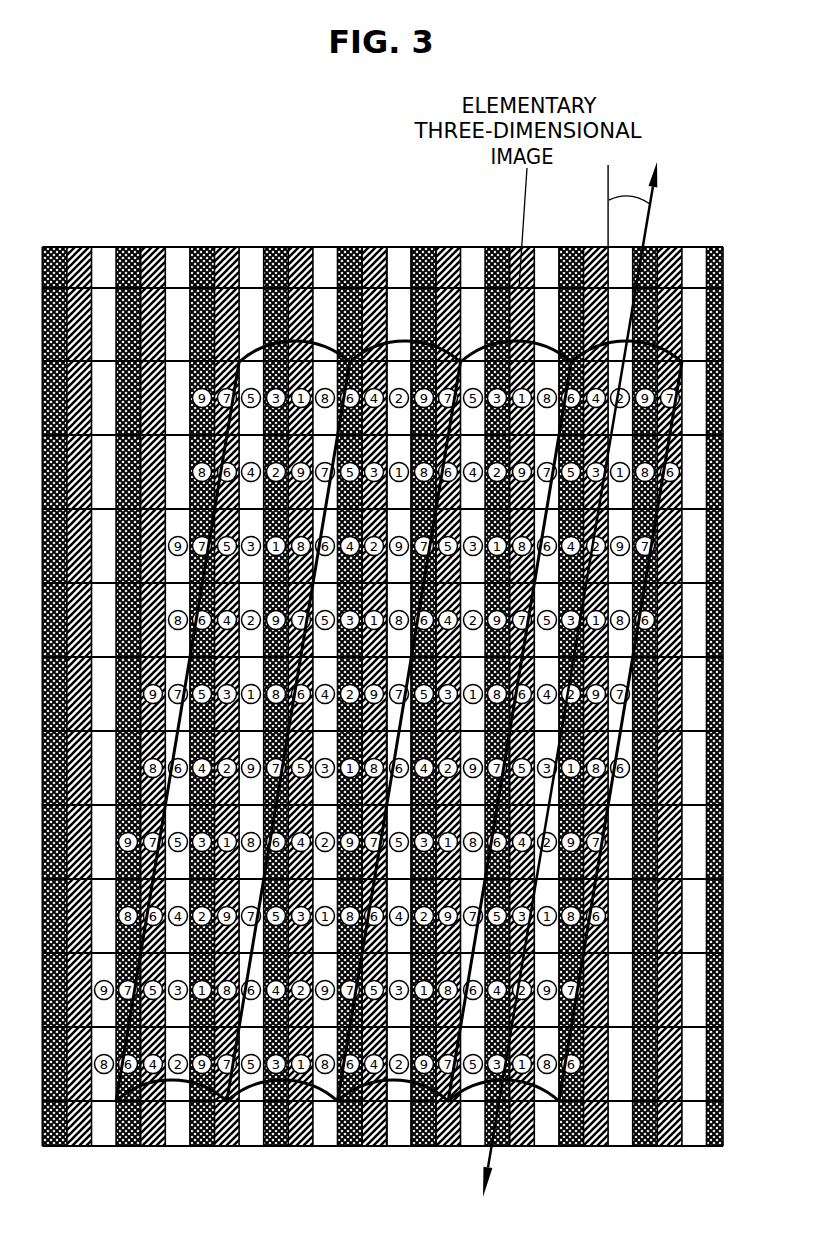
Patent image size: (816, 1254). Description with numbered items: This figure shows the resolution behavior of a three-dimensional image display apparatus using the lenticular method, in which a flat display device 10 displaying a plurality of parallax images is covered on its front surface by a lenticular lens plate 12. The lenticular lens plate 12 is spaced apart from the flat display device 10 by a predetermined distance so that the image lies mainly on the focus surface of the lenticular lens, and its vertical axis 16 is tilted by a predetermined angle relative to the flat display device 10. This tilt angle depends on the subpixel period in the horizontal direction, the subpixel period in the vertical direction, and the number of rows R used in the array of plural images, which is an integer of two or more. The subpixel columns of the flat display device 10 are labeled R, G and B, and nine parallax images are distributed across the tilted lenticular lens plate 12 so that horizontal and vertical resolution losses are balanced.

The flat display device 10 is at (250, 246).
The lenticular lens plate 12 is at (122, 1147).
The vertical axis 16 is at (493, 1158).
The number of rows R is at (373, 246).
The green sub-pixel column G is at (399, 246).
The blue sub-pixel column B is at (425, 246).